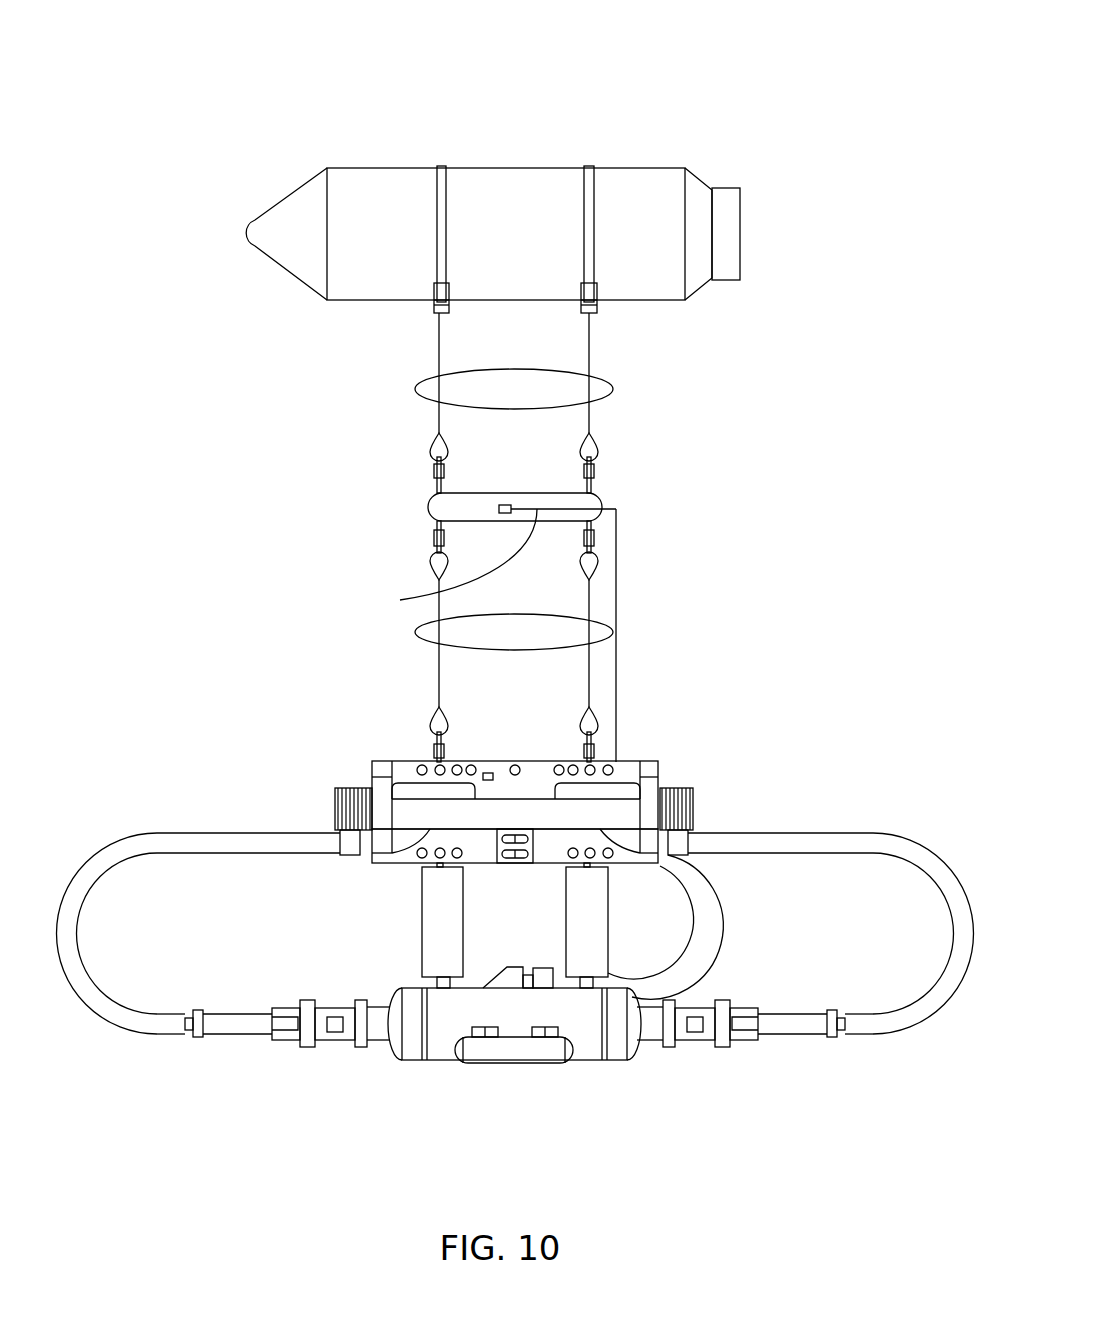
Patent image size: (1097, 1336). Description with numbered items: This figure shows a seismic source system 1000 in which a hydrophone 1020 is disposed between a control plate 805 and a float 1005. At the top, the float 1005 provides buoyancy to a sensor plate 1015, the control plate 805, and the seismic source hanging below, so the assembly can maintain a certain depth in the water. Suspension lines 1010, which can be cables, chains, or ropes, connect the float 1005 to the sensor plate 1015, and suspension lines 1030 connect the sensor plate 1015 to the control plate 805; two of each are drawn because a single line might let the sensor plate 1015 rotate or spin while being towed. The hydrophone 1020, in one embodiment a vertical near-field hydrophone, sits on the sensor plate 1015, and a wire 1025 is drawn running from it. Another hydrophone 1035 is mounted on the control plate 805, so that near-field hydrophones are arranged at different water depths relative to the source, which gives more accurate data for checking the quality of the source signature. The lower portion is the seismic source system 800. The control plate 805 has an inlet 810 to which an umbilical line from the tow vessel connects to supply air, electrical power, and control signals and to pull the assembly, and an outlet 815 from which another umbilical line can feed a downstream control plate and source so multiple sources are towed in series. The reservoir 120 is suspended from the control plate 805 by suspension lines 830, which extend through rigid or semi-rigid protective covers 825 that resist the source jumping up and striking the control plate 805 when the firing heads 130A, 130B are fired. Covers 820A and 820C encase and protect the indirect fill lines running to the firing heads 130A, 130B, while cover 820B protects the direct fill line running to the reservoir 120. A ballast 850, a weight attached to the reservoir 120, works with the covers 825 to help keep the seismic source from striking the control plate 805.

The seismic source system 1000 is at (782, 93).
The float 1005 is at (741, 210).
The suspension lines 1010 is at (600, 382).
The sensor plate 1015 is at (598, 492).
The hydrophone 1020 is at (499, 509).
The wire 1025 is at (400, 600).
The suspension lines 1030 is at (613, 628).
The hydrophone 1035 is at (490, 772).
The seismic source system 800 is at (845, 650).
The control plate 805 is at (410, 760).
The inlet 810 is at (325, 805).
The outlet 815 is at (713, 808).
The cover 820A is at (110, 833).
The cover 820B is at (738, 943).
The cover 820C is at (880, 835).
The protective cover 825 is at (422, 898).
The suspension lines 830 is at (437, 982).
The reservoir 120 is at (412, 1060).
The ballast 850 is at (566, 1063).
The firing head 130A is at (298, 1053).
The firing head 130B is at (765, 1053).